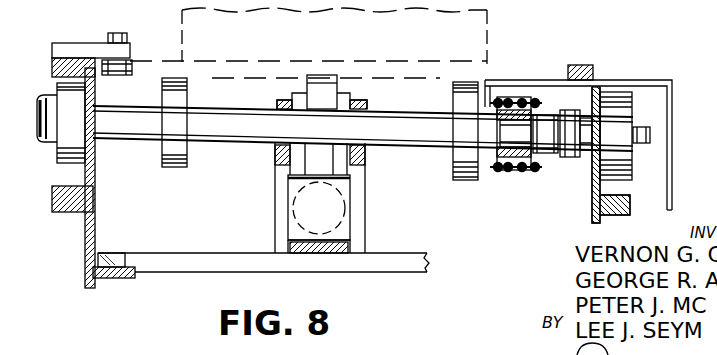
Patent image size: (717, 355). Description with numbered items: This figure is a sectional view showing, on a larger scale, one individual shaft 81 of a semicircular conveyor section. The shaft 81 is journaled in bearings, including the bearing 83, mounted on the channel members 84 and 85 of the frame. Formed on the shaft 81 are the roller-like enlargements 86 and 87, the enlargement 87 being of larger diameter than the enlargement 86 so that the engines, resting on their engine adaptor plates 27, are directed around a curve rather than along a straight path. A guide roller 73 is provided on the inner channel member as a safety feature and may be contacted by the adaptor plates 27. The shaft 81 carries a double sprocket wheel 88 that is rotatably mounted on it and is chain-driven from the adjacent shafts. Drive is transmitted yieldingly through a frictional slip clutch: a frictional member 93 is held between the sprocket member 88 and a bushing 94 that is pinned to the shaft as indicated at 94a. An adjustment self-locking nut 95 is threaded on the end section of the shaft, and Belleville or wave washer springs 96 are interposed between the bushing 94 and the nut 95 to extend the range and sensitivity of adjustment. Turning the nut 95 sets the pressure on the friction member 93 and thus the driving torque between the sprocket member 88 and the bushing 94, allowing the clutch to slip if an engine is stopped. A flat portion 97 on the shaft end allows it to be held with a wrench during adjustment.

The engine adaptor plate 27 is at (502, 64).
The guide roller 73 is at (118, 75).
The shaft 81 is at (226, 141).
The bearing 83 is at (623, 105).
The channel member 84 is at (82, 173).
The channel member 85 is at (627, 187).
The roller-like enlargement 86 is at (172, 167).
The roller-like enlargement 87 is at (462, 181).
The double sprocket wheel 88 is at (500, 172).
The frictional member 93 is at (541, 170).
The bushing 94 is at (548, 120).
The pin 94a is at (551, 112).
The adjustment self-locking nut 95 is at (575, 112).
The Belleville or wave washer springs 96 is at (551, 153).
The flat portion 97 is at (650, 133).